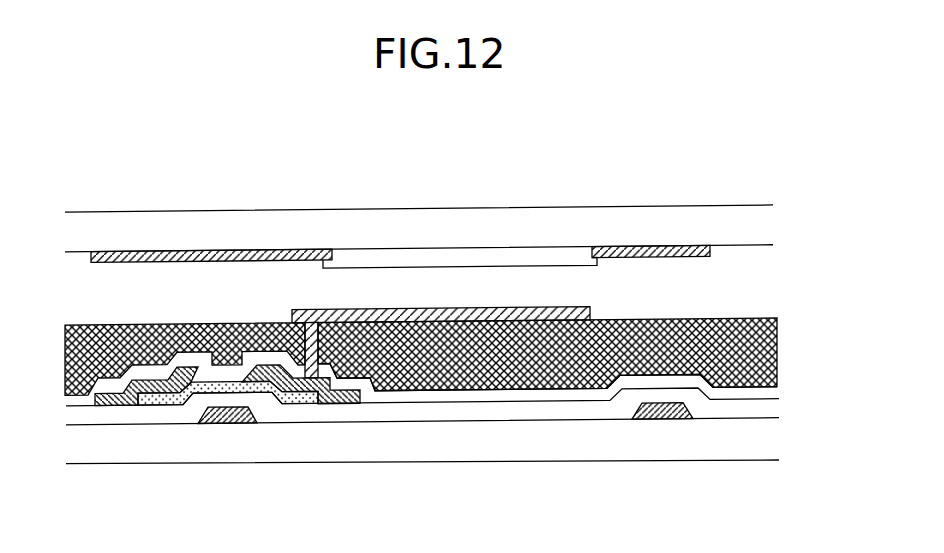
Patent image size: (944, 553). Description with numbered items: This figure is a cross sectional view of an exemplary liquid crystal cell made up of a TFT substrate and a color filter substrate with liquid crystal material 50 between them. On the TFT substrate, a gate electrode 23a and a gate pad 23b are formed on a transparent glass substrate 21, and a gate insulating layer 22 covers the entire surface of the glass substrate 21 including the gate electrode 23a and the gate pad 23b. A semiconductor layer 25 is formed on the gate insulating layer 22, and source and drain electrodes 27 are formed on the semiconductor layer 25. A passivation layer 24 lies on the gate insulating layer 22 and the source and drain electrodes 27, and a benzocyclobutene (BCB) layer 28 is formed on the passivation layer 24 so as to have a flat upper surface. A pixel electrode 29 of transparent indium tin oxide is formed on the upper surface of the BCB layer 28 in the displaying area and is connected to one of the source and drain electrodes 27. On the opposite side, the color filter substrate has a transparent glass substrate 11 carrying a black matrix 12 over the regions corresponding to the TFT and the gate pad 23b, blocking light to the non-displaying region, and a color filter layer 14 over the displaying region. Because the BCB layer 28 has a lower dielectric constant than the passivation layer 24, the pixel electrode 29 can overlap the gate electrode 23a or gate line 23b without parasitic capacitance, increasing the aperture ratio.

The transparent glass substrate 11 is at (729, 229).
The black matrix 12 is at (712, 255).
The color filter layer 14 is at (472, 262).
The liquid crystal material 50 is at (723, 300).
The transparent glass substrate 21 is at (752, 450).
The gate insulating layer 22 is at (767, 415).
The gate electrode 23a is at (227, 422).
The gate pad 23b is at (652, 426).
The passivation layer 24 is at (767, 403).
The semiconductor layer 25 is at (163, 409).
The source and drain electrodes 27 is at (112, 408).
The benzocyclobutene (BCB) layer 28 is at (187, 326).
The pixel electrode 29 is at (575, 311).